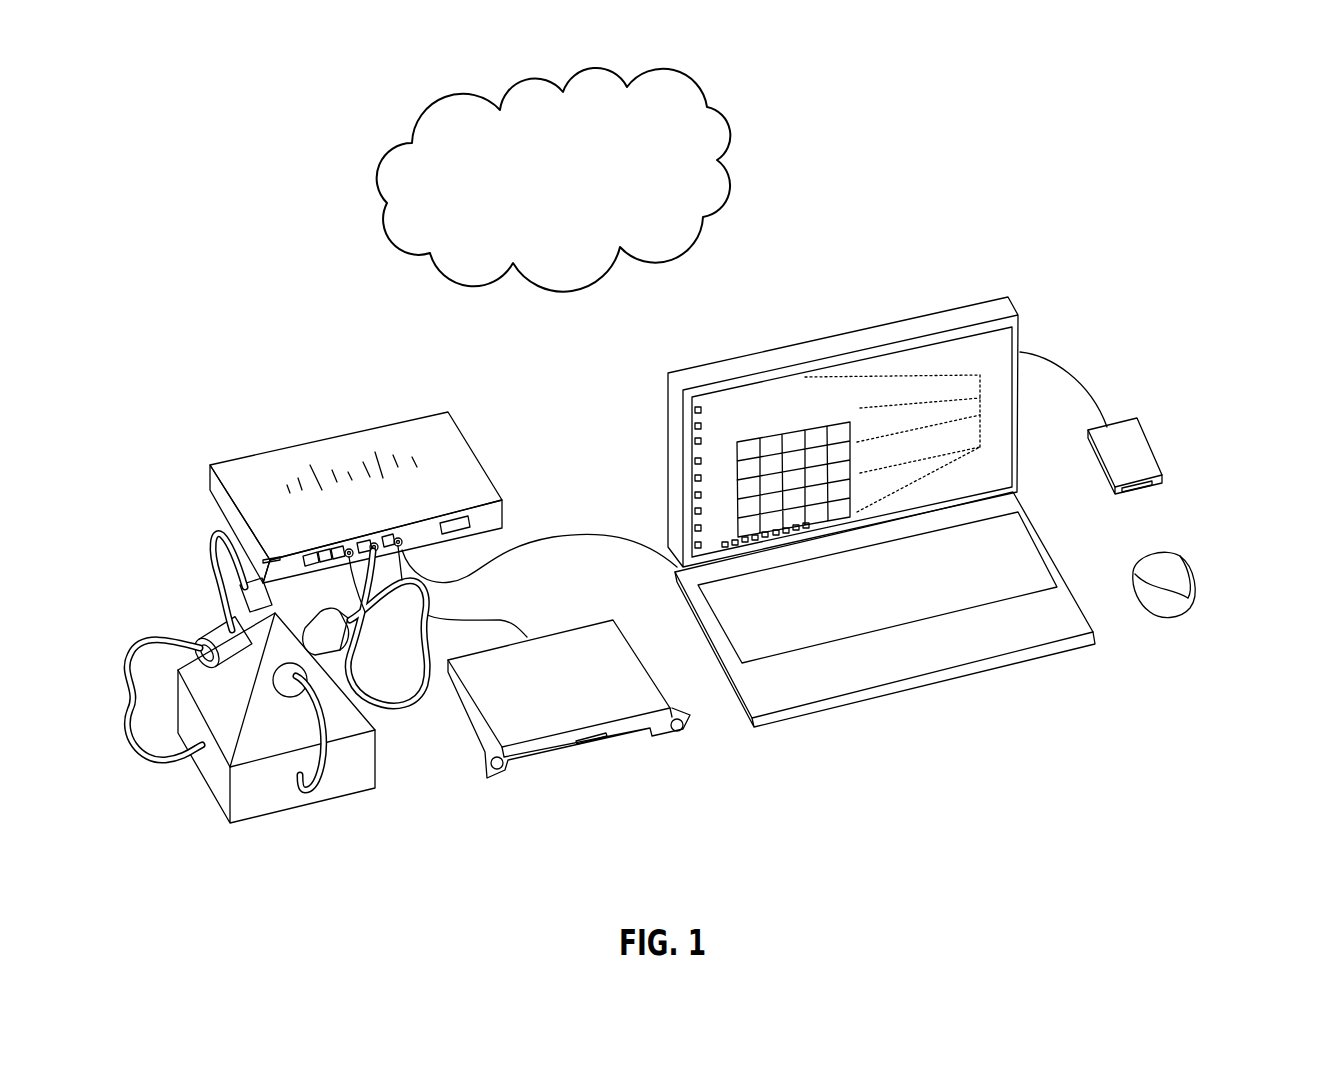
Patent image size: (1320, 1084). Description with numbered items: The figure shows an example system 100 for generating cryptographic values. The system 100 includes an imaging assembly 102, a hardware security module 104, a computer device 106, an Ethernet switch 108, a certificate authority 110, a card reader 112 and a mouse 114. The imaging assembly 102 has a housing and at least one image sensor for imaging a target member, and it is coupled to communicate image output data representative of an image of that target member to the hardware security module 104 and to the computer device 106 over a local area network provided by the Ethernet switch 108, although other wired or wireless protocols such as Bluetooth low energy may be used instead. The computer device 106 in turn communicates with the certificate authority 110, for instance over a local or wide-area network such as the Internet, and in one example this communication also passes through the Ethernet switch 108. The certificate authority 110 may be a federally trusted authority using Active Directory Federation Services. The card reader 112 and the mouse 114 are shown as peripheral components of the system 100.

The system 100 is at (218, 210).
The imaging assembly 102 is at (364, 817).
The hardware security module 104 is at (561, 777).
The computer device 106 is at (952, 294).
The Ethernet switch 108 is at (465, 413).
The certificate authority 110 is at (744, 127).
The card reader 112 is at (1142, 441).
The mouse 114 is at (1182, 551).